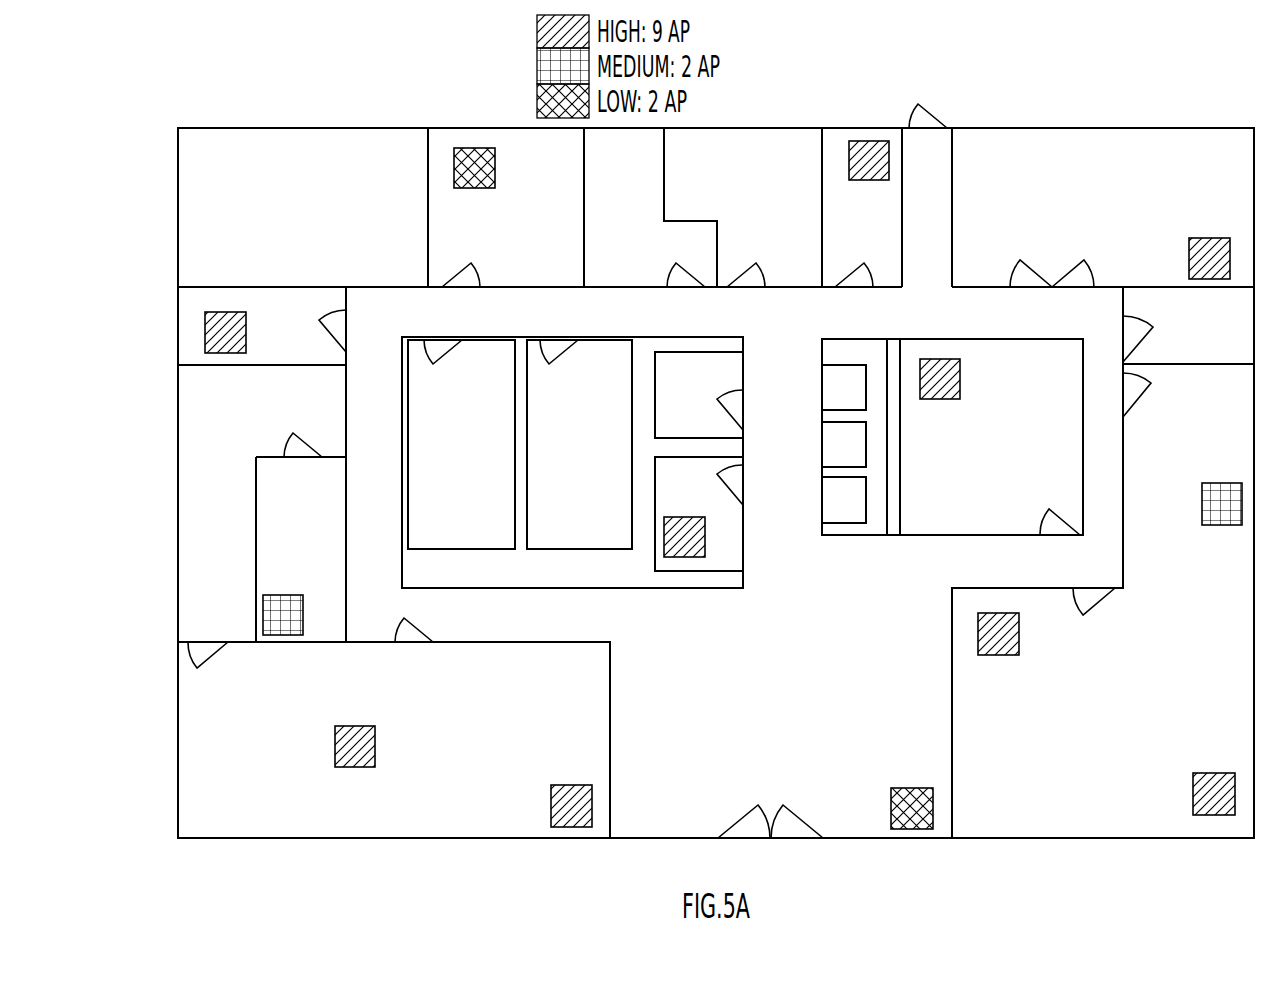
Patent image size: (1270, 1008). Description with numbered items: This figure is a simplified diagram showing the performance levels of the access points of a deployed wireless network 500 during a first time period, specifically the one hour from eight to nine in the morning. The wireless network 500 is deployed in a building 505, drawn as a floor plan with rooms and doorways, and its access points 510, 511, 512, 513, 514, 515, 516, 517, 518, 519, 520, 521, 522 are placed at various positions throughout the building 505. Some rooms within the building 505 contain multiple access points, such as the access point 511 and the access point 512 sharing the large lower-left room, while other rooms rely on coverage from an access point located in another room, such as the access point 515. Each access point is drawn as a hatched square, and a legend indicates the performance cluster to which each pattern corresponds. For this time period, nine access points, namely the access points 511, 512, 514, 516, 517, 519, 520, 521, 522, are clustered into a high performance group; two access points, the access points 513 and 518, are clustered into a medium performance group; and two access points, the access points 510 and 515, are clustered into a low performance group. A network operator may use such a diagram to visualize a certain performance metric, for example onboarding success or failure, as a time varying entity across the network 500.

The wireless network 500 is at (172, 65).
The building 505 is at (1180, 128).
The access point 510 is at (912, 788).
The access point 511 is at (572, 785).
The access point 512 is at (355, 767).
The access point 513 is at (281, 595).
The access point 514 is at (246, 335).
The access point 515 is at (475, 188).
The access point 516 is at (878, 180).
The access point 517 is at (1189, 260).
The access point 518 is at (1224, 483).
The access point 519 is at (1193, 795).
The access point 520 is at (997, 655).
The access point 521 is at (935, 399).
The access point 522 is at (677, 517).